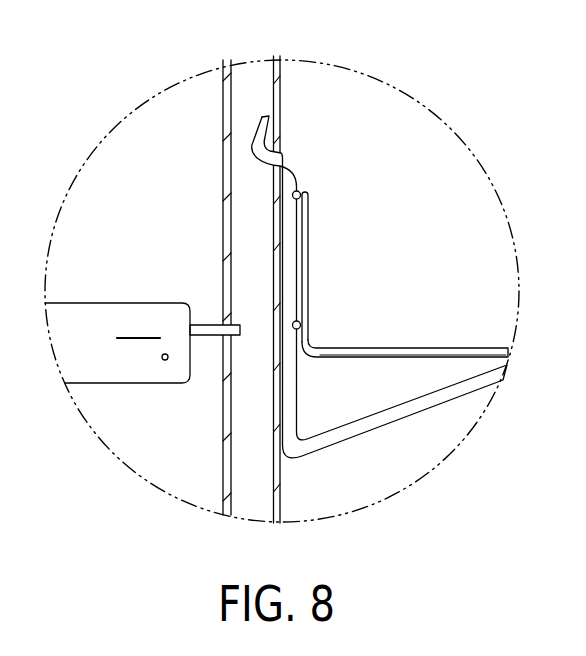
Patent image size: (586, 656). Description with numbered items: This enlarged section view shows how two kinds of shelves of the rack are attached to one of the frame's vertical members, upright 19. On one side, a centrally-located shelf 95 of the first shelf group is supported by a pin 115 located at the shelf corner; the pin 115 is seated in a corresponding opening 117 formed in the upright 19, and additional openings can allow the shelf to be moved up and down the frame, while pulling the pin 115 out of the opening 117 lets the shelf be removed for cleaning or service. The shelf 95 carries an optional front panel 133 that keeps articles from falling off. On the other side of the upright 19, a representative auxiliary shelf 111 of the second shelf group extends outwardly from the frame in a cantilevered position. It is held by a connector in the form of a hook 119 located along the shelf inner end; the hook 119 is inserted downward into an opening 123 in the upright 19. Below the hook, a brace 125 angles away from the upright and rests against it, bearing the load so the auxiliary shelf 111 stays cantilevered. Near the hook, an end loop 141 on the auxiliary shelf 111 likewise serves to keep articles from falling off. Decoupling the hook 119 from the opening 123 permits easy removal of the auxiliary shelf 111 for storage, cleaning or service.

The upright 19 is at (284, 95).
The shelf 95 is at (80, 327).
The auxiliary shelf 111 is at (403, 348).
The pin 115 is at (205, 325).
The opening 117 is at (223, 318).
The hook 119 is at (252, 148).
The opening 123 is at (288, 153).
The brace 125 is at (403, 418).
The front panel 133 is at (138, 325).
The end loop 141 is at (309, 251).